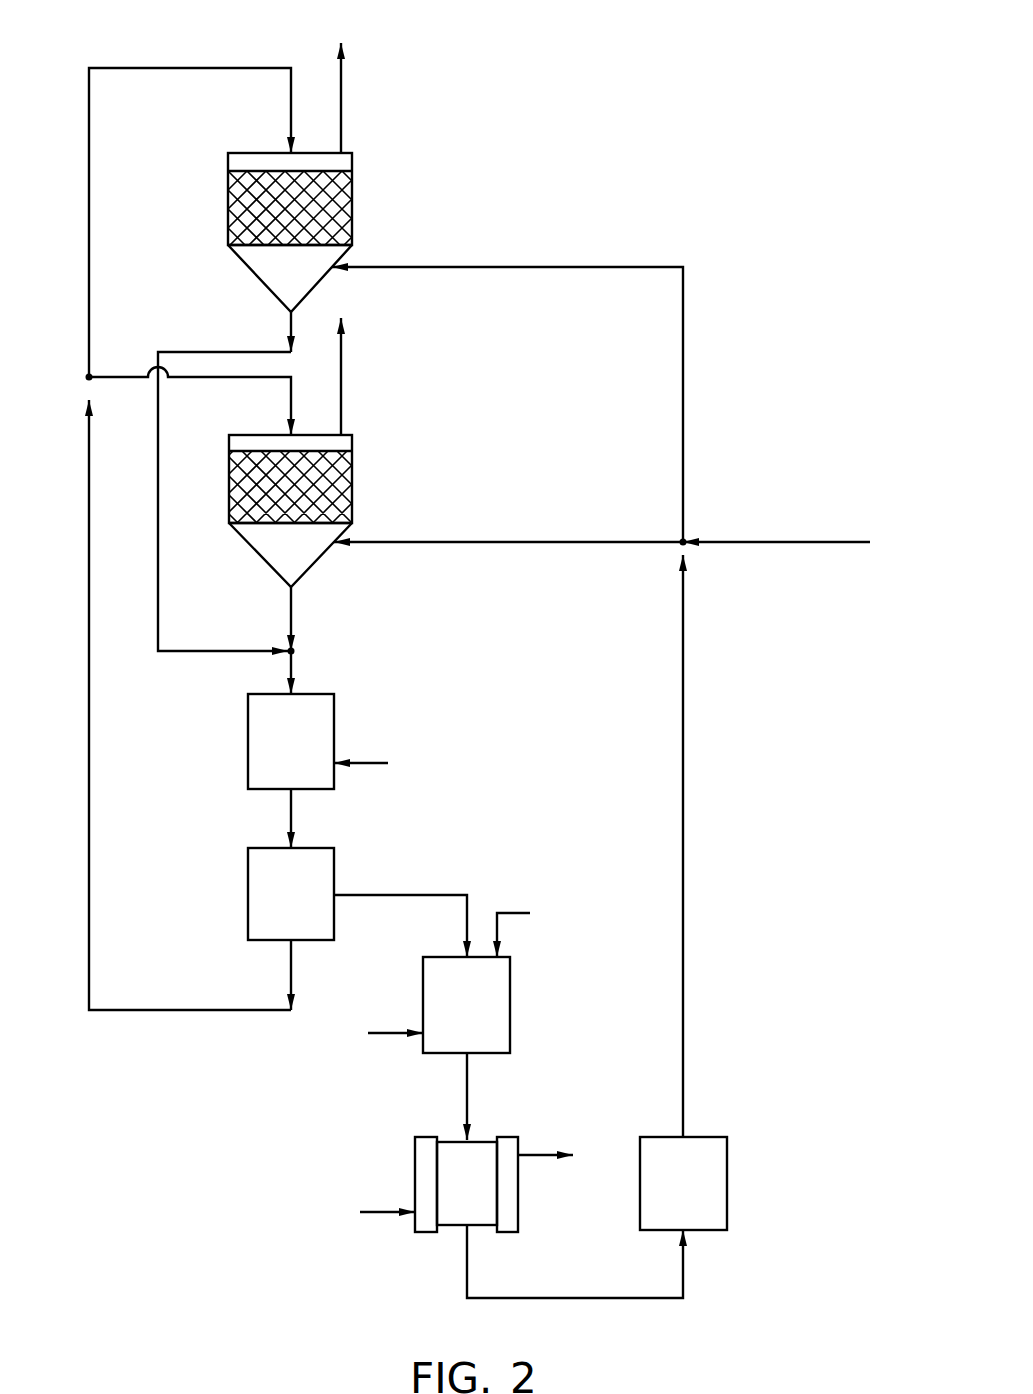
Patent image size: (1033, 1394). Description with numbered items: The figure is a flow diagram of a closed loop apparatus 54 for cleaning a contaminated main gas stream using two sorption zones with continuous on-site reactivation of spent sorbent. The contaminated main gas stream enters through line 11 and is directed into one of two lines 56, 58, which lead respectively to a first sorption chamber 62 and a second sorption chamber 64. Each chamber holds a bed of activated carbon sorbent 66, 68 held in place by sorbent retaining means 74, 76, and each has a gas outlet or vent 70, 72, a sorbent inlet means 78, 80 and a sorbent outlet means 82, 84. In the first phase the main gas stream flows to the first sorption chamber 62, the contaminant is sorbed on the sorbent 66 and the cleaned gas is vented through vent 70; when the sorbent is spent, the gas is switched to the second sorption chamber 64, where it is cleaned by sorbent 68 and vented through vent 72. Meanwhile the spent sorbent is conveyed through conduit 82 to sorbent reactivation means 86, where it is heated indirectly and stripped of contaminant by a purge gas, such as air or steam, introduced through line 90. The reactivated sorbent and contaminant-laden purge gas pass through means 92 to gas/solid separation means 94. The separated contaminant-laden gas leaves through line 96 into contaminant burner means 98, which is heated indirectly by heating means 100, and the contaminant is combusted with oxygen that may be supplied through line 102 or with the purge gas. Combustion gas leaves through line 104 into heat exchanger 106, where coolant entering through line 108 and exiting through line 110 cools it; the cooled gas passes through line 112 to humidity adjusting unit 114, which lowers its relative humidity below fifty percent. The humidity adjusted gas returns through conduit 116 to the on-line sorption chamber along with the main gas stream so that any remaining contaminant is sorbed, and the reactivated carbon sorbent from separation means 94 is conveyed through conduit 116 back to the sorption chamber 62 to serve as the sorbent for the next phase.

The line 11 is at (743, 542).
The apparatus for cleaning a contaminated main gas stream 54 is at (657, 133).
The line 56 is at (490, 542).
The line 58 is at (500, 267).
The first sorption chamber 62 is at (229, 487).
The second sorption chamber 64 is at (255, 153).
The activated carbon sorbent 66 is at (330, 490).
The activated carbon sorbent 68 is at (330, 230).
The gas outlet or vent 70 is at (343, 370).
The gas outlet or vent 72 is at (343, 93).
The sorbent retaining means 74 is at (333, 453).
The sorbent retaining means 76 is at (333, 170).
The sorbent inlet means 78 is at (290, 388).
The sorbent inlet means 80 is at (187, 68).
The sorbent outlet means 82 is at (290, 615).
The sorbent outlet means 84 is at (257, 352).
The sorbent reactivation means 86 is at (315, 694).
The line 90 is at (372, 763).
The conveying means 92 is at (293, 818).
The gas/solid separation means 94 is at (248, 897).
The line 96 is at (362, 893).
The contaminant burner means 98 is at (510, 1017).
The heating means 100 is at (382, 1035).
The line 102 is at (512, 913).
The line 104 is at (467, 1105).
The heat exchanger 106 is at (415, 1187).
The line 108 is at (377, 1213).
The line 110 is at (528, 1150).
The line 112 is at (517, 1298).
The humidity adjusting unit 114 is at (727, 1150).
The conduit 116 is at (89, 795).